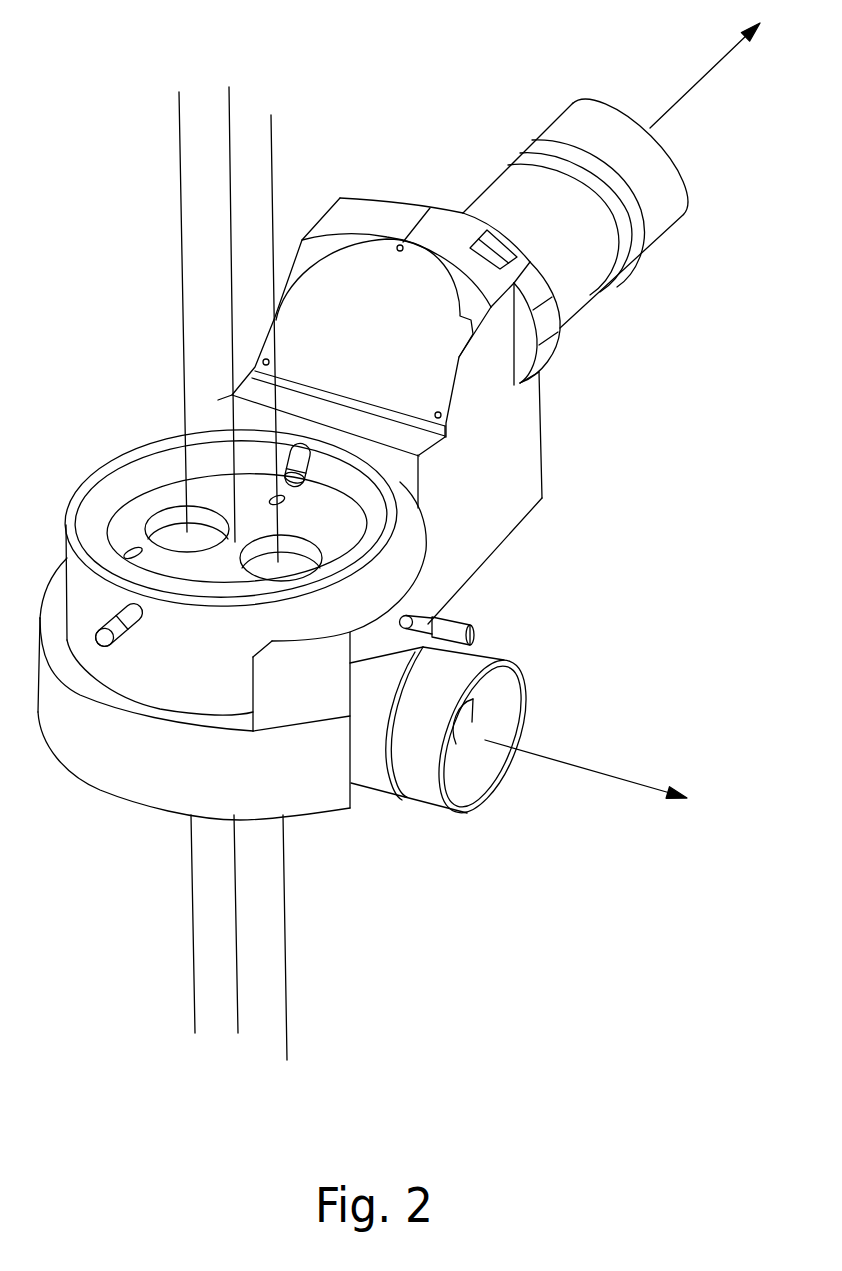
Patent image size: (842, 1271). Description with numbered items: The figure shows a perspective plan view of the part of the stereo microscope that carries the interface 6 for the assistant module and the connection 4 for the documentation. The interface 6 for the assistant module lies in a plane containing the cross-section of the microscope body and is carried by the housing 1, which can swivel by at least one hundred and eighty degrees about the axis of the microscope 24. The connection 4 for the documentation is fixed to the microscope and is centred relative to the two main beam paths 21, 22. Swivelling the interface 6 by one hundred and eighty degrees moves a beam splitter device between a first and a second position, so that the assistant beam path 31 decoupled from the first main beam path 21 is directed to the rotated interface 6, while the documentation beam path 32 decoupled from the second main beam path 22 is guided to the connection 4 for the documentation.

The housing 1 is at (93, 755).
The connection for the documentation 4 is at (659, 241).
The interface for the assistant module 6 is at (433, 807).
The first main beam path 21 is at (195, 1007).
The second main beam path 22 is at (287, 1030).
The axis of the microscope 24 is at (228, 107).
The assistant beam path 31 is at (598, 773).
The documentation beam path 32 is at (702, 82).